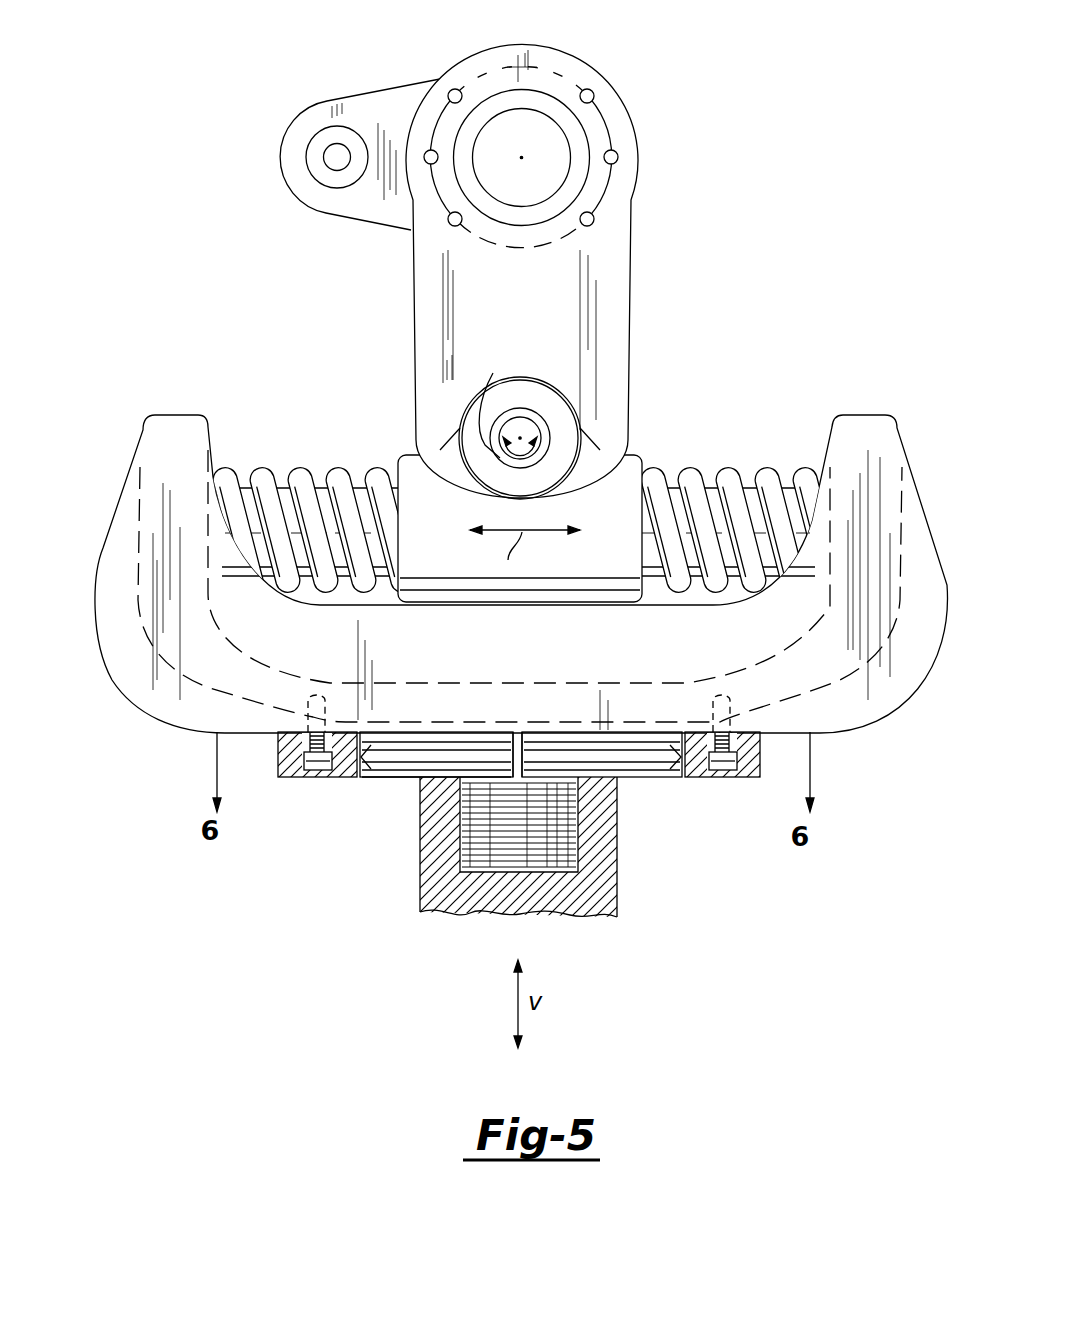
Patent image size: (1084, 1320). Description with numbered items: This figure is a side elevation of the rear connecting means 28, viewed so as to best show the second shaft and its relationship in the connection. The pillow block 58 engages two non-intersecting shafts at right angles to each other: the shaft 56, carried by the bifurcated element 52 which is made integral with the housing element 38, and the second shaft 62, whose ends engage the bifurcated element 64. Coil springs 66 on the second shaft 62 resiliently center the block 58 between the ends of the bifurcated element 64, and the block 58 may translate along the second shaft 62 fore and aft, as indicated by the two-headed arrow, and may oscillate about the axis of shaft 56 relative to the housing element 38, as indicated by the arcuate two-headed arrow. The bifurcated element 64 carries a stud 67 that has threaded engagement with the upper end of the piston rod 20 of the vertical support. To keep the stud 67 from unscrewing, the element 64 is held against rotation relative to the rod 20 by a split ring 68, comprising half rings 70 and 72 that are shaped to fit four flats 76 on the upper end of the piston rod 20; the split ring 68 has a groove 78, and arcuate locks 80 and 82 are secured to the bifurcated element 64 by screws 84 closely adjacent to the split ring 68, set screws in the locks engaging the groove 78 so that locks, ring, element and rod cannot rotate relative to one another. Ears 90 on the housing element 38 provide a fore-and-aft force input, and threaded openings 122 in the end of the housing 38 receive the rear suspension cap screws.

The piston rod 20 is at (426, 893).
The connecting means 28 is at (528, 493).
The housing element 38 is at (605, 114).
The bifurcated element 52 is at (624, 300).
The shaft 56 is at (533, 422).
The pillow block 58 is at (638, 452).
The second shaft 62 is at (354, 503).
The bifurcated element 64 is at (157, 693).
The coil springs 66 is at (264, 468).
The stud 67 is at (552, 867).
The split ring 68 is at (534, 755).
The half ring 70 is at (366, 772).
The half ring 72 is at (655, 765).
The flats 76 is at (460, 763).
The groove 78 is at (406, 762).
The arcuate lock 80 is at (288, 776).
The arcuate lock 82 is at (697, 770).
The screws 84 is at (318, 772).
The ears 90 is at (330, 100).
The threaded openings 122 is at (449, 91).